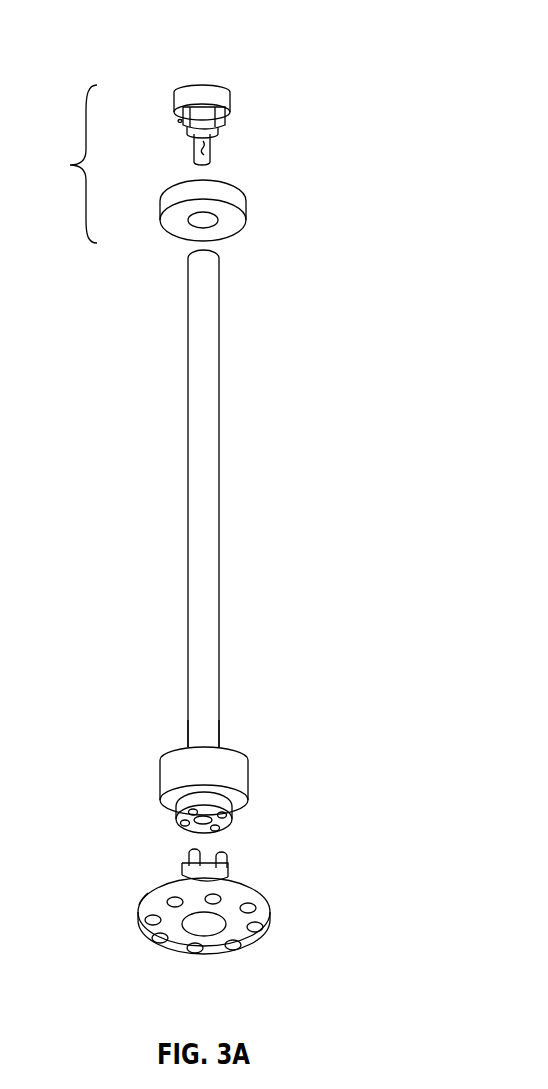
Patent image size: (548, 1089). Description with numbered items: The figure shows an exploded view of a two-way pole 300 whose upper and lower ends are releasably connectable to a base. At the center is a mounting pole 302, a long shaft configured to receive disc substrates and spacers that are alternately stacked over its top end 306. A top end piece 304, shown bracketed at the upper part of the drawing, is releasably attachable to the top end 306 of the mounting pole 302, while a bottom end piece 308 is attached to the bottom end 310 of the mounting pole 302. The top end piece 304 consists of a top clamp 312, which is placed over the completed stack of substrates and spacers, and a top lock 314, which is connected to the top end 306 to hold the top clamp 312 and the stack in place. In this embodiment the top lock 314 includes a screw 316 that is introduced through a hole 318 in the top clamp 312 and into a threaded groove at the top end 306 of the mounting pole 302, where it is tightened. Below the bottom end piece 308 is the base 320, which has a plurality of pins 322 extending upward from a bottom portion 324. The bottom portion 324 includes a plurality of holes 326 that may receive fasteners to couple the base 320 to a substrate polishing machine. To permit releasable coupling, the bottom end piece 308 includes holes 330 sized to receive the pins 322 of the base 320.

The two-way pole 300 is at (262, 36).
The mounting pole 302 is at (205, 602).
The top end piece 304 is at (61, 164).
The top end 306 is at (205, 262).
The bottom end piece 308 is at (160, 772).
The bottom end 310 is at (205, 737).
The top clamp 312 is at (237, 203).
The top lock 314 is at (231, 88).
The screw 316 is at (208, 148).
The hole 318 is at (205, 219).
The base 320 is at (273, 907).
The pins 322 is at (190, 855).
The bottom portion 324 is at (145, 903).
The holes 326 is at (195, 953).
The holes 330 is at (217, 830).